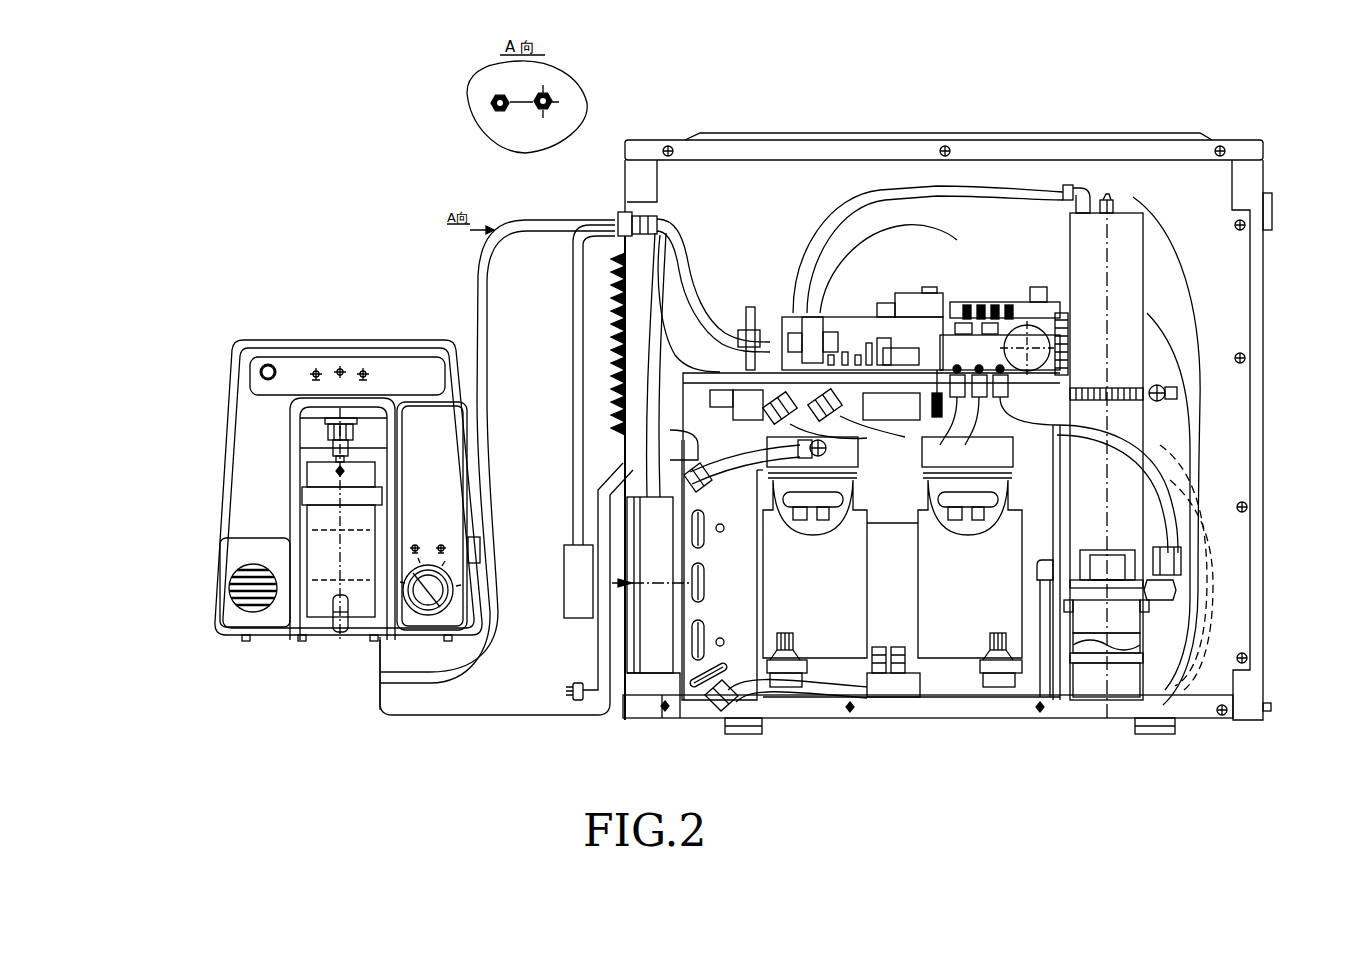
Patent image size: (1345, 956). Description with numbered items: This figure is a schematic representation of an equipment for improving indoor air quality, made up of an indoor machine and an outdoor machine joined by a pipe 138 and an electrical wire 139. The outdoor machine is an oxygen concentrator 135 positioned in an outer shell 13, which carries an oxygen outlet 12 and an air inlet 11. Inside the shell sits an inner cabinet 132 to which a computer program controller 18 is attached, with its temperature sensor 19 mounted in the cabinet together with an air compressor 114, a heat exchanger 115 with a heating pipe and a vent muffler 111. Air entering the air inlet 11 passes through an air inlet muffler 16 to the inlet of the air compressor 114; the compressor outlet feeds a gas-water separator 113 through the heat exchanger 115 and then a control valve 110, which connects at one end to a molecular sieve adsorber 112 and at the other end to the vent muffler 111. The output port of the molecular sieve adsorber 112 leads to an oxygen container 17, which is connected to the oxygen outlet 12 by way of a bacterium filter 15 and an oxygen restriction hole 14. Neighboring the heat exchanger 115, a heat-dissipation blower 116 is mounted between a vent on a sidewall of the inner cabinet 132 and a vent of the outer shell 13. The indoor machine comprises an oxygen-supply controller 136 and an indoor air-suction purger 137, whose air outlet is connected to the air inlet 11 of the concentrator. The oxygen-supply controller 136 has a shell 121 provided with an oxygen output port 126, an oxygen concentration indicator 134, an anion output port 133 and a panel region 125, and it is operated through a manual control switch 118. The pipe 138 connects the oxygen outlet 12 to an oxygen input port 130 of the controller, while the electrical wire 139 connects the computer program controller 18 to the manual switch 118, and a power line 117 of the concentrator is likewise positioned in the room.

The air inlet 11 is at (543, 110).
The oxygen outlet 12 is at (497, 112).
The outer shell 13 is at (645, 167).
The oxygen restriction hole 14 is at (697, 268).
The bacterium filter 15 is at (752, 305).
The air inlet muffler 16 is at (767, 393).
The oxygen container 17 is at (1017, 297).
The computer program controller 18 is at (810, 323).
The temperature sensor 19 is at (933, 390).
The control valve 110 is at (1000, 350).
The vent muffler 111 is at (867, 690).
The molecular sieve adsorber 112 is at (1140, 463).
The gas-water separator 113 is at (1127, 620).
The air compressor 114 is at (930, 655).
The heat exchanger 115 is at (693, 713).
The heat-dissipation blower 116 is at (647, 668).
The power line 117 is at (577, 684).
The manual control switch 118 is at (437, 600).
The shell 121 is at (337, 531).
The panel 125 is at (310, 613).
The oxygen output port 126 is at (330, 431).
The oxygen input port 130 is at (362, 624).
The inner cabinet 132 is at (1060, 690).
The anion output port 133 is at (250, 595).
The oxygen concentration indicator 134 is at (350, 372).
The oxygen concentrator 135 is at (1253, 132).
The oxygen-supply controller 136 is at (283, 332).
The indoor air-suction purger 137 is at (561, 580).
The pipe 138 is at (497, 452).
The electrical wire 139 is at (545, 709).